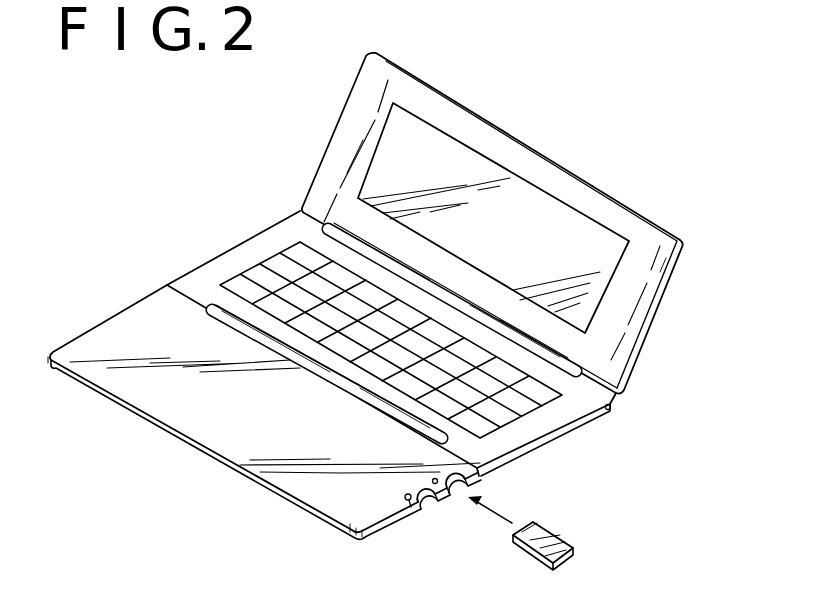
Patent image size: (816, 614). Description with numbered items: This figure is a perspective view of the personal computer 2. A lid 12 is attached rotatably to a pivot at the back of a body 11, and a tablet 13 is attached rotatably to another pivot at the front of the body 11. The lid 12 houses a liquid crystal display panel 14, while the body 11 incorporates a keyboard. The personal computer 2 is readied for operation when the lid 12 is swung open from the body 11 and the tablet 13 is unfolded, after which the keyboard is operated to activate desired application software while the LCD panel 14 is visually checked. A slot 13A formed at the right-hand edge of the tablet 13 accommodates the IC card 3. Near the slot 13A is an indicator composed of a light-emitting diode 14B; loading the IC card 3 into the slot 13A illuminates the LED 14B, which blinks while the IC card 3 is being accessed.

The personal computer 2 is at (600, 157).
The body 11 is at (563, 413).
The lid 12 is at (647, 293).
The tablet 13 is at (210, 432).
The slot 13A is at (432, 514).
The liquid crystal display panel 14 is at (455, 152).
The light-emitting diode 14B is at (408, 505).
The IC card 3 is at (557, 537).